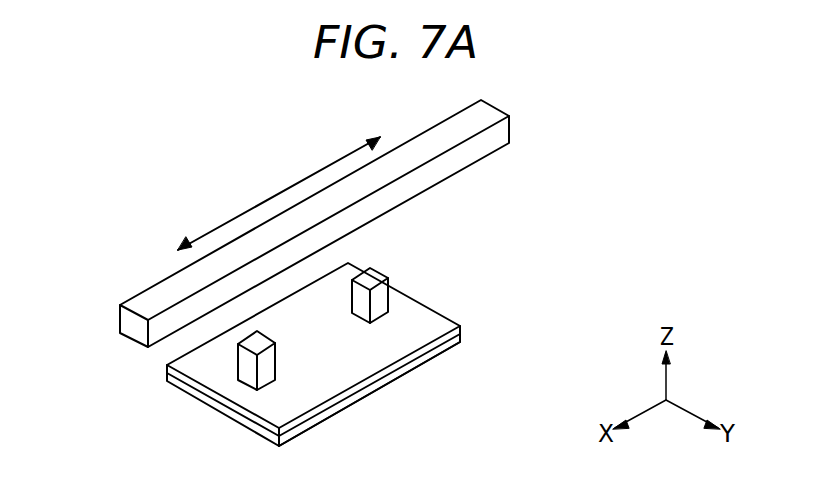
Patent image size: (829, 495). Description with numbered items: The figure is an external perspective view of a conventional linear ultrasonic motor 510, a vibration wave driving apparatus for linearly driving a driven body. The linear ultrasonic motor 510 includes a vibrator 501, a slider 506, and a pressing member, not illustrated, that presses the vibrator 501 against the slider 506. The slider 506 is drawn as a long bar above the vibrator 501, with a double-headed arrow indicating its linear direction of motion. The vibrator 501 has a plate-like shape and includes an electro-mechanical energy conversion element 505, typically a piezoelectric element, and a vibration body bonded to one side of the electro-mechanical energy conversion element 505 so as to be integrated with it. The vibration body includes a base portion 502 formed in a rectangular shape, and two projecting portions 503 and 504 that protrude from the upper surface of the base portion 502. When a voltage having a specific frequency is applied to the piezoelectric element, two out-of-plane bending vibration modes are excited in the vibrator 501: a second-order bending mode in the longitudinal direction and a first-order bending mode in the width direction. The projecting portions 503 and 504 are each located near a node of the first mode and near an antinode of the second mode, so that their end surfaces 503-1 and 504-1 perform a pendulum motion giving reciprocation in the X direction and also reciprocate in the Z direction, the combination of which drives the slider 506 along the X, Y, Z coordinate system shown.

The vibrator 501 is at (523, 255).
The base portion 502 is at (243, 398).
The projecting portion 503 is at (268, 362).
The end surface 503-1 is at (250, 340).
The projecting portion 504 is at (383, 312).
The end surface 504-1 is at (368, 273).
The electro-mechanical energy conversion element 505 is at (290, 437).
The slider 506 is at (153, 298).
The linear ultrasonic motor 510 is at (88, 90).